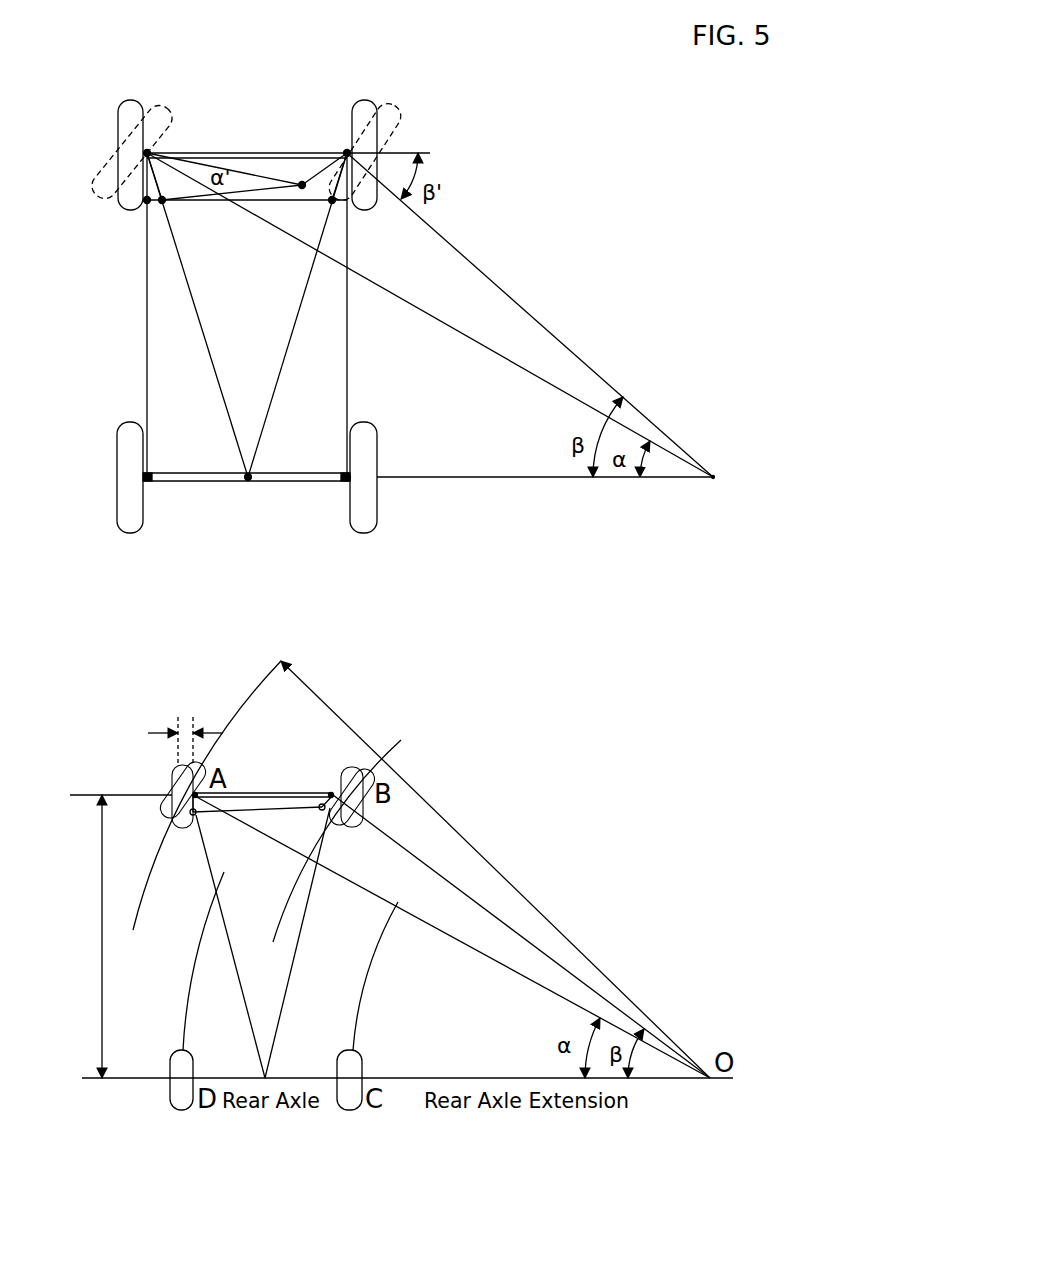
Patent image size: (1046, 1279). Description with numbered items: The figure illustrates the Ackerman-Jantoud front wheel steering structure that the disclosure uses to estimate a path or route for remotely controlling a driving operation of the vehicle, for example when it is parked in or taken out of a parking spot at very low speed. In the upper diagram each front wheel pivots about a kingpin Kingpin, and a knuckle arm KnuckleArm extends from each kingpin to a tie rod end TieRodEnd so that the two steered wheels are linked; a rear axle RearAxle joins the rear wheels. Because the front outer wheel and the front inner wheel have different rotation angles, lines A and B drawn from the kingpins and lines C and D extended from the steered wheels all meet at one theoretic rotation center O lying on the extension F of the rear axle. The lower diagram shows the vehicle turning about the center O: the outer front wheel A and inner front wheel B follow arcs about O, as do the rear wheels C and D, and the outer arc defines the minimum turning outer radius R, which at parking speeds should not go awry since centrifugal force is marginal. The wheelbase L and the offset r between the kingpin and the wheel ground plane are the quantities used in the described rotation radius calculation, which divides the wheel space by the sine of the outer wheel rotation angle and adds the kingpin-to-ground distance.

The kingpin Kingpin is at (342, 150).
The knuckle arm KnuckleArm is at (151, 181).
The tie rod end TieRodEnd is at (326, 205).
The rear axle RearAxle is at (277, 485).
The line A / outer front wheel A is at (197, 315).
The line B / inner front wheel B is at (297, 315).
The line C is at (530, 315).
The line D is at (430, 315).
The line F is at (545, 461).
The turning center O is at (725, 478).
The minimum turning outer radius R is at (495, 869).
The wheelbase L is at (92, 936).
The offset r is at (185, 738).